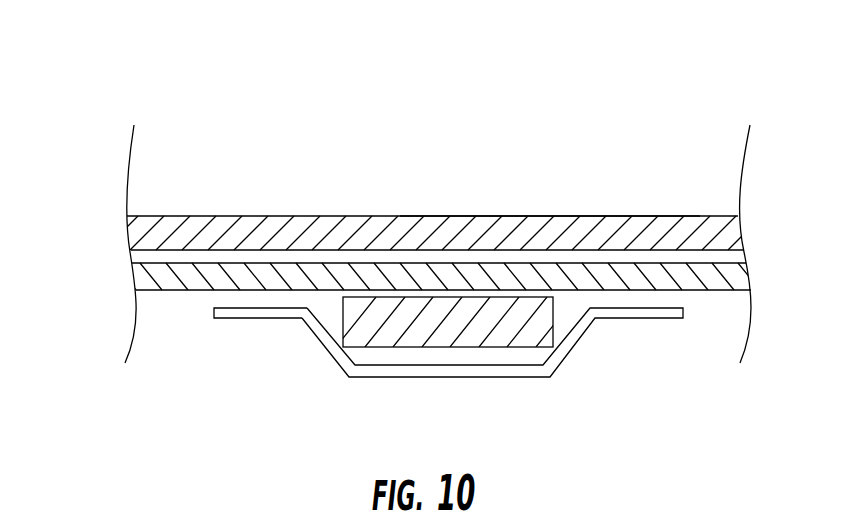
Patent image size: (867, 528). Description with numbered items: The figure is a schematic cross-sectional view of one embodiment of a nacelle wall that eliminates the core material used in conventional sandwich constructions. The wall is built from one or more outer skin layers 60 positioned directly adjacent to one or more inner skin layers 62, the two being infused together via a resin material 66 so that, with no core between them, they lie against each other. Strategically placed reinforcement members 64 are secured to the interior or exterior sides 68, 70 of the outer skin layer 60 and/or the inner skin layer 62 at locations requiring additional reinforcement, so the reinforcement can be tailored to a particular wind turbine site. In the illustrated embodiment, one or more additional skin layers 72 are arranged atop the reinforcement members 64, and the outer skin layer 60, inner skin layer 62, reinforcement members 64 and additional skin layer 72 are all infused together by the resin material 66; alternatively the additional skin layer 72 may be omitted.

The outer skin layer 60 is at (128, 236).
The inner skin layer 62 is at (135, 273).
The reinforcement member 64 is at (502, 337).
The resin material 66 is at (715, 258).
The exterior side 68 is at (537, 216).
The interior side 70 is at (165, 290).
The additional skin layer 72 is at (437, 377).